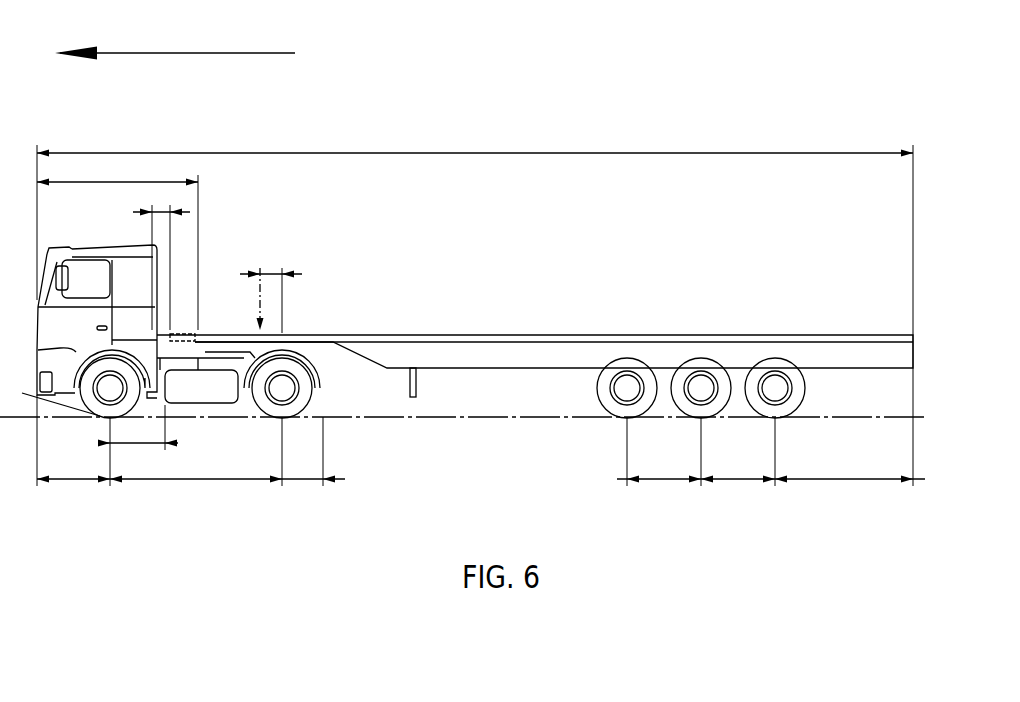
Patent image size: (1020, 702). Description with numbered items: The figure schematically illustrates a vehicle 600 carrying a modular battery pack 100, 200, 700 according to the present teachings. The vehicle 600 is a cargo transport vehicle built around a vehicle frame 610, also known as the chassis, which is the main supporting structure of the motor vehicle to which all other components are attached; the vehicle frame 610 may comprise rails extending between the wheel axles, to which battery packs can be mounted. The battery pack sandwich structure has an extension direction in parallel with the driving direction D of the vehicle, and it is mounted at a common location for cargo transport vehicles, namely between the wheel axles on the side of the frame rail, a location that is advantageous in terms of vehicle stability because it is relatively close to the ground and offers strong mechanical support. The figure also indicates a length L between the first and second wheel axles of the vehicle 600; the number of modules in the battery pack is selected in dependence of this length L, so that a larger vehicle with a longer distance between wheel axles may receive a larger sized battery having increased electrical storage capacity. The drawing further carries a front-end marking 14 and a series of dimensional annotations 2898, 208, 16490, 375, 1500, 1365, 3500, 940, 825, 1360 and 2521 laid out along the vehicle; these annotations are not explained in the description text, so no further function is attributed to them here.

The driving direction D is at (194, 53).
The vehicle 600 is at (368, 92).
The modular battery pack 100 is at (460, 353).
The modular battery pack 200 is at (460, 353).
The modular battery pack 700 is at (197, 385).
The front end of vehicle 14 is at (33, 385).
The vehicle frame 610 is at (220, 363).
The cab length dimension 2898 is at (118, 182).
The dimension 208 is at (163, 212).
The overall length dimension 16490 is at (480, 153).
The fifth wheel offset dimension 375 is at (275, 274).
The fifth wheel position 1500 is at (262, 302).
The front overhang dimension 1365 is at (78, 479).
The wheelbase dimension 3500 is at (180, 479).
The length between first and second wheel axles L is at (209, 493).
The dimension 940 is at (140, 445).
The rear overhang dimension 825 is at (300, 482).
The trailer axle spacing dimension 1360 is at (667, 479).
The trailer rear overhang dimension 2521 is at (848, 479).